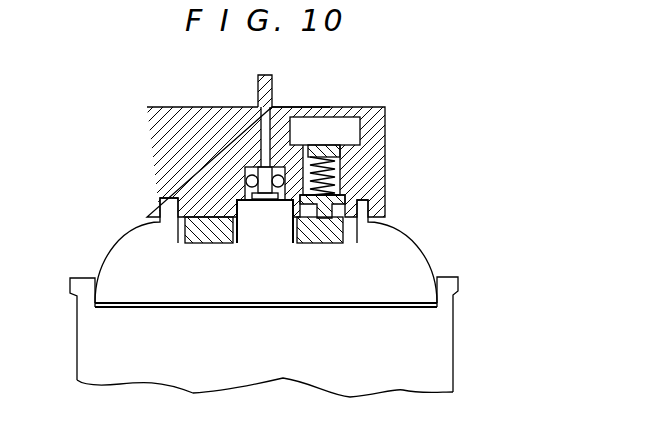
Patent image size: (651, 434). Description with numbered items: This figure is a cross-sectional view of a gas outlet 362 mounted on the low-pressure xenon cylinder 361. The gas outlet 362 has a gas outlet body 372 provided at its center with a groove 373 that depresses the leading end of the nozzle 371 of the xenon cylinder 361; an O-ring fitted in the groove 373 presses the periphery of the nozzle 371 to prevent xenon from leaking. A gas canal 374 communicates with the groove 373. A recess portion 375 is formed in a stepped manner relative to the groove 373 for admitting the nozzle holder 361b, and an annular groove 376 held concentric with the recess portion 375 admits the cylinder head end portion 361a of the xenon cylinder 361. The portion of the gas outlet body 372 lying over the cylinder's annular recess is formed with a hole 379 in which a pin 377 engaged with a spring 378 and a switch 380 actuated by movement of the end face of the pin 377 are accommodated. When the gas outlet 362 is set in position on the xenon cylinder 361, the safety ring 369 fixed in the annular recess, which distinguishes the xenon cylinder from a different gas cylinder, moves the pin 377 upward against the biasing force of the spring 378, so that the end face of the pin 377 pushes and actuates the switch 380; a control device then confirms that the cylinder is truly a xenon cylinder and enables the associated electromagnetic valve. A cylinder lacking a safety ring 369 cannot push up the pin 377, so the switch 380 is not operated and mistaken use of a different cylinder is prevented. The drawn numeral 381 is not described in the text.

The xenon cylinder 361 is at (440, 342).
The cylinder head end portion 361a is at (170, 212).
The nozzle holder 361b is at (265, 212).
The gas outlet 362 is at (270, 142).
The safety ring 369 is at (315, 244).
The nozzle 371 is at (272, 165).
The gas outlet body 372 is at (387, 120).
The groove 373 is at (265, 170).
The gas canal 374 is at (283, 110).
The recess portion 375 is at (245, 187).
The annular groove 376 is at (160, 219).
The pin 377 is at (333, 153).
The spring 378 is at (333, 175).
The hole 379 is at (336, 190).
The switch 380 is at (347, 128).
The valve seat 381 is at (230, 192).